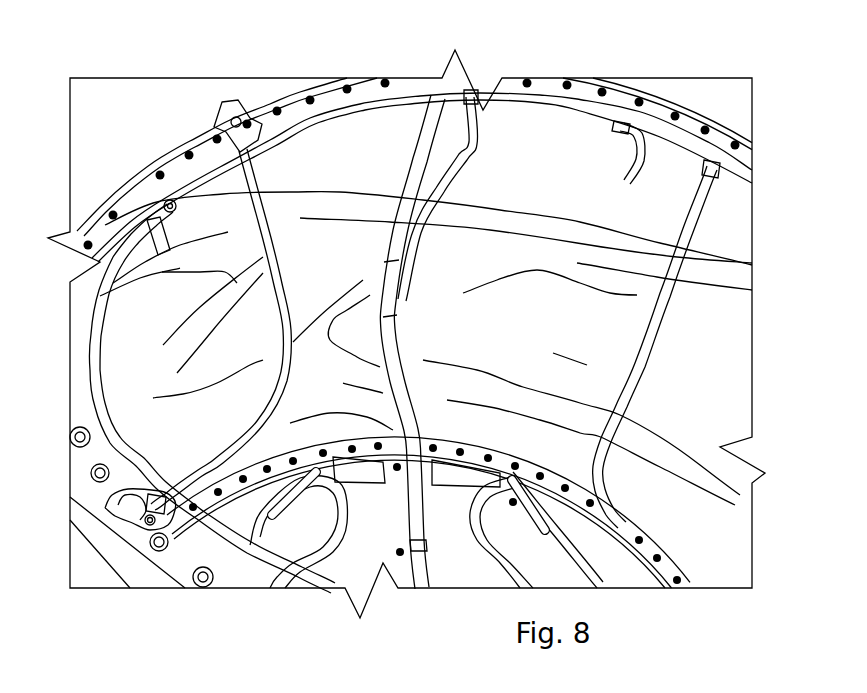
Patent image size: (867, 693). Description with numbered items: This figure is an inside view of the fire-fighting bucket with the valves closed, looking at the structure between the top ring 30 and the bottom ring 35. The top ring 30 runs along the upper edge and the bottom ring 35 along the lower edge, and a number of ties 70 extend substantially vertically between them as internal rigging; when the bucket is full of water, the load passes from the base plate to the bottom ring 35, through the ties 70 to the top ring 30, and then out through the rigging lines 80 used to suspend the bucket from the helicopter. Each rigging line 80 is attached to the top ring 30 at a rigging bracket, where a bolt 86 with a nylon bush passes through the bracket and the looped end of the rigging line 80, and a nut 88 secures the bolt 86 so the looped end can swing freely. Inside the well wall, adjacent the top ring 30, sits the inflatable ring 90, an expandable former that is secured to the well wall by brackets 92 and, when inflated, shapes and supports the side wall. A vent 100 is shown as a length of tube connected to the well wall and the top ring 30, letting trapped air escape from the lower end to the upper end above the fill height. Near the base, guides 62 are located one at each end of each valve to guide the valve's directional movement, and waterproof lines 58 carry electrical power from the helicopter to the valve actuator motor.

The top ring 30 is at (747, 157).
The brackets 92 is at (100, 200).
The inflatable ring 90 is at (340, 208).
The ties 70 is at (263, 255).
The waterproof lines 58 is at (427, 138).
The vent 100 is at (165, 205).
The rigging lines 80 is at (245, 450).
The bottom ring 35 is at (680, 585).
The guides 62 is at (375, 469).
The nut 88 is at (158, 525).
The bolt 86 is at (165, 537).